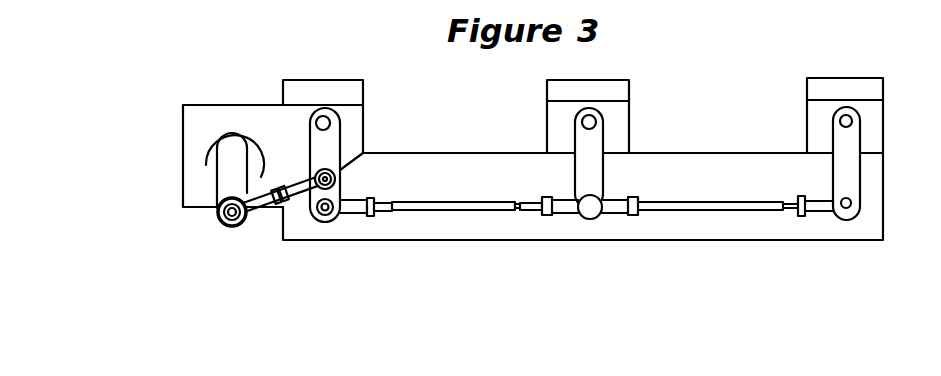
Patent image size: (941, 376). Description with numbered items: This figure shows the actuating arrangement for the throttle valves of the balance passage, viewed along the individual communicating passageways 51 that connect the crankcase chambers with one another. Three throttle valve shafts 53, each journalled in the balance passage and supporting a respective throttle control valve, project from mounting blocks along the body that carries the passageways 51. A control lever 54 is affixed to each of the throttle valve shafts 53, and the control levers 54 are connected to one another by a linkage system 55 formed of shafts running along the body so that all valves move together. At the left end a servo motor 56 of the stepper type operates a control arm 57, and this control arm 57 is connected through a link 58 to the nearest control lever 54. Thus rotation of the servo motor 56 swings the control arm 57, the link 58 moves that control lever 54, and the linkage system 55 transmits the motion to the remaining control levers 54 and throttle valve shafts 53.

The communicating passageway 51 is at (612, 233).
The throttle valve shaft 53 is at (337, 121).
The control lever 54 is at (322, 150).
The linkage system 55 is at (462, 212).
The servo motor 56 is at (183, 155).
The control arm 57 is at (227, 192).
The link 58 is at (259, 212).